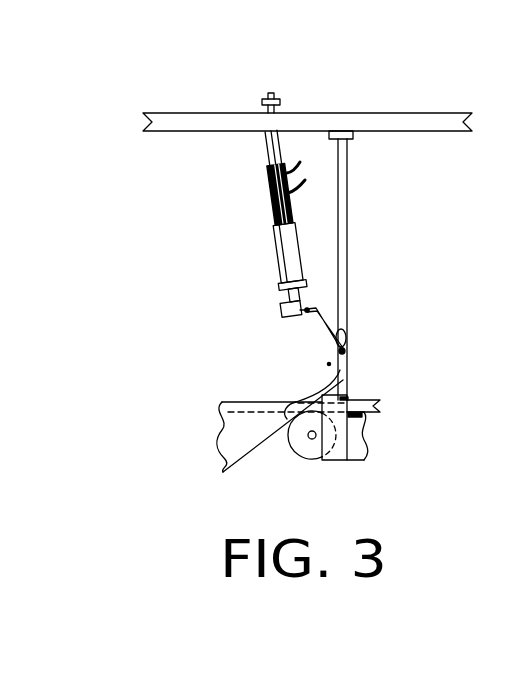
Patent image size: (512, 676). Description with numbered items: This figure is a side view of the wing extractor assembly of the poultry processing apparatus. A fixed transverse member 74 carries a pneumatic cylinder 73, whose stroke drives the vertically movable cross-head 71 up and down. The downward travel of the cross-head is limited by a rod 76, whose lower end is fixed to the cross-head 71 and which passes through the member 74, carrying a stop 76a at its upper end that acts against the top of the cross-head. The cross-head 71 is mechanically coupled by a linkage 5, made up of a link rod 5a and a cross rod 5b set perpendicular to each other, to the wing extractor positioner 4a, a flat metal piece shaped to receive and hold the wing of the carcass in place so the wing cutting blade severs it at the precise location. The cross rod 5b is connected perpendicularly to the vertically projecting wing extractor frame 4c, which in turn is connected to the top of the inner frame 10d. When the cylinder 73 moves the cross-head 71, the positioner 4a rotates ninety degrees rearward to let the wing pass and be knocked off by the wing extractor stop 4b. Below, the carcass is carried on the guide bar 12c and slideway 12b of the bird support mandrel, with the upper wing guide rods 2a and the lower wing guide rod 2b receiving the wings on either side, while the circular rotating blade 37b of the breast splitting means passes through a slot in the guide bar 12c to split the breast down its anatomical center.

The inner frame 10d is at (388, 118).
The stop 76a is at (277, 93).
The rod 76 is at (273, 145).
The fixed transverse member 74 is at (268, 171).
The pneumatic cylinder 73 is at (274, 206).
The vertically movable cross-head 71 is at (282, 308).
The link rod 5a is at (328, 308).
The linkage 5 is at (326, 323).
The cross rod 5b is at (346, 346).
The wing extractor frame 4c is at (350, 222).
The wing extractor positioner 4a is at (350, 386).
The wing extractor stop 4b is at (313, 395).
The upper wing guide rods 2a is at (362, 403).
The guide bar 12c is at (372, 411).
The lower wing guide rod 2b is at (366, 440).
The slideway 12b is at (250, 437).
The circular rotating blade 37b is at (311, 450).